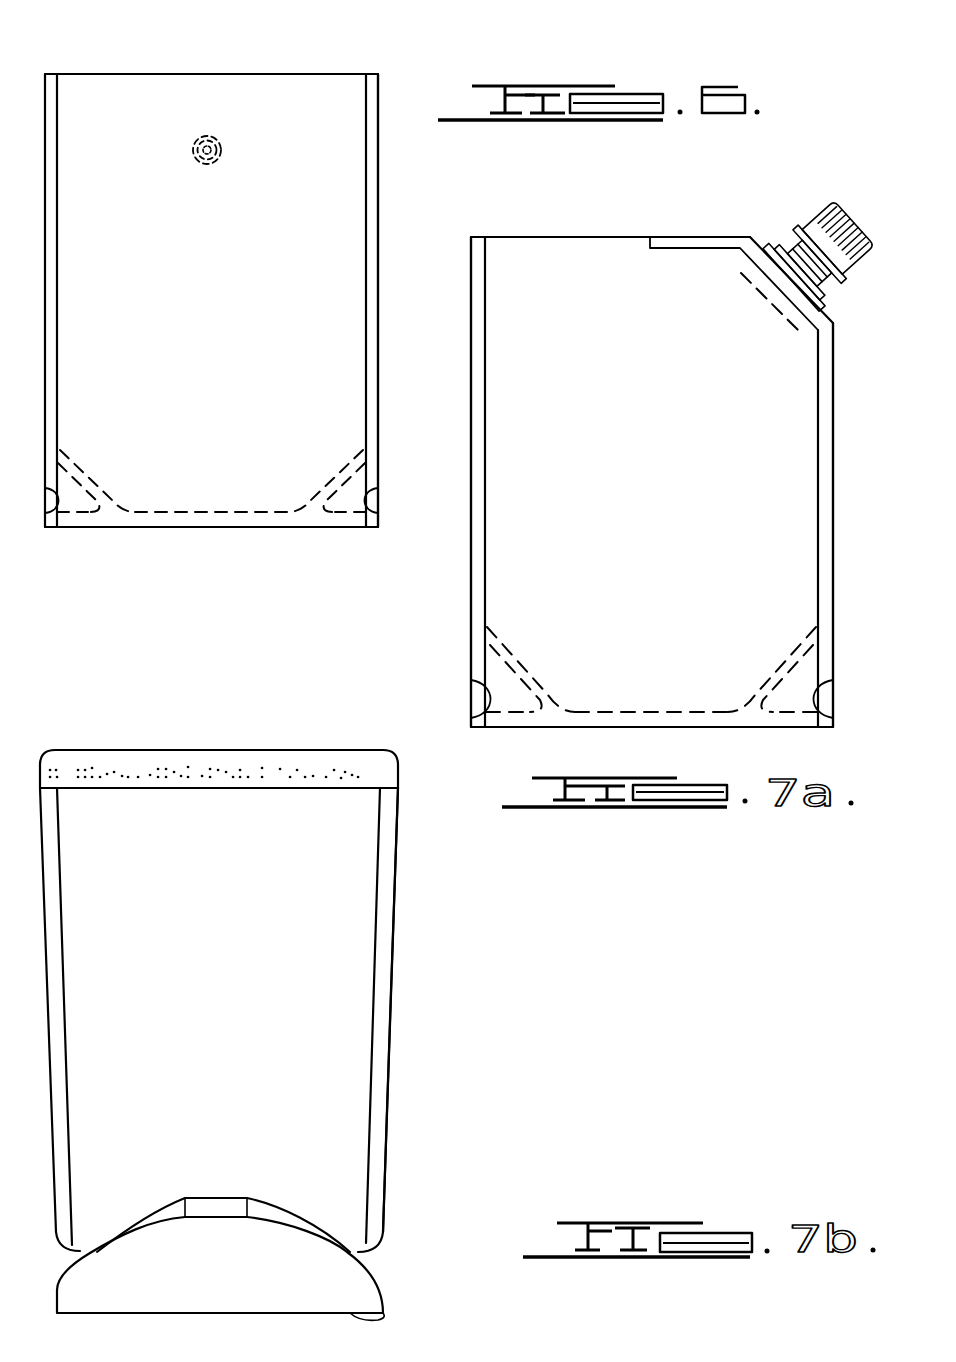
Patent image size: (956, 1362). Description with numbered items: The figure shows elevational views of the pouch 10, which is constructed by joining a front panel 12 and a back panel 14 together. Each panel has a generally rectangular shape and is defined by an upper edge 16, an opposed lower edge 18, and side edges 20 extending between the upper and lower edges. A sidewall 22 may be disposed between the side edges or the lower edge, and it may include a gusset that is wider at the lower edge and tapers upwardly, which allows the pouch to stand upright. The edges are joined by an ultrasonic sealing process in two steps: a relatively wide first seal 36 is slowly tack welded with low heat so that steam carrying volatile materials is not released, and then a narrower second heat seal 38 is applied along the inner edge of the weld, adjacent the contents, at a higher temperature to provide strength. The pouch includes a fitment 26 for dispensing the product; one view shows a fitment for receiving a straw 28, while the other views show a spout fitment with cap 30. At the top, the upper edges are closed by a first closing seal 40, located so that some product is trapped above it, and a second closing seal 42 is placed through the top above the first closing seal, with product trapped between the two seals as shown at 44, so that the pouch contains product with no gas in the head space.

In FIG. 6, the pouch 10 is at (143, 48).
In FIG. 7a, the pouch 10 is at (675, 207).
In FIG. 7b, the pouch 10 is at (526, 981).
In FIG. 6, the front panel 12 is at (316, 160).
In FIG. 7a, the front panel 12 is at (525, 510).
In FIG. 7b, the front panel 12 is at (320, 1025).
In FIG. 6, the back panel 14 is at (378, 198).
In FIG. 7a, the back panel 14 is at (470, 582).
In FIG. 7b, the back panel 14 is at (398, 872).
In FIG. 6, the upper edge 16 is at (255, 74).
In FIG. 7a, the upper edge 16 is at (560, 237).
In FIG. 7b, the upper edge 16 is at (92, 750).
In FIG. 6, the lower edge 18 is at (135, 527).
In FIG. 7a, the lower edge 18 is at (760, 727).
In FIG. 7b, the lower edge 18 is at (370, 1253).
In FIG. 6, the side edges 20 is at (57, 310).
In FIG. 7a, the side edges 20 is at (820, 445).
In FIG. 7b, the side edges 20 is at (380, 1077).
In FIG. 6, the sidewall 22 is at (330, 512).
In FIG. 7a, the sidewall 22 is at (485, 680).
In FIG. 7a, the fitment 26 is at (794, 206).
In FIG. 6, the fitment for receiving a straw 28 is at (195, 165).
In FIG. 7a, the spout fitment with cap 30 is at (855, 285).
In FIG. 7b, the spout fitment with cap 30 is at (385, 1316).
In FIG. 6, the first seal 36 is at (378, 395).
In FIG. 7a, the first seal 36 is at (832, 588).
In FIG. 7b, the first seal 36 is at (388, 1142).
In FIG. 6, the second heat seal 38 is at (366, 330).
In FIG. 7a, the second heat seal 38 is at (818, 540).
In FIG. 7b, the second heat seal 38 is at (380, 962).
In FIG. 7b, the first closing seal 40 is at (152, 788).
In FIG. 7b, the second closing seal 42 is at (193, 750).
In FIG. 7b, the trapped product 44 is at (272, 770).